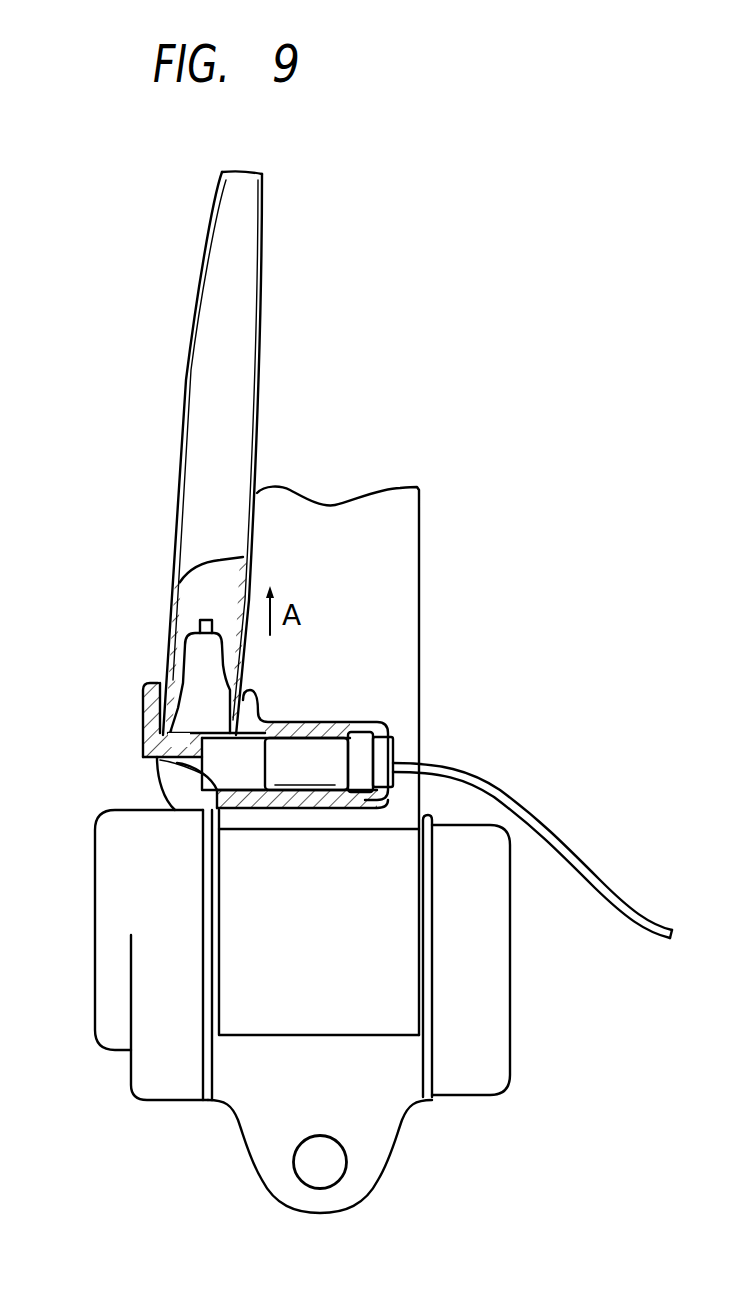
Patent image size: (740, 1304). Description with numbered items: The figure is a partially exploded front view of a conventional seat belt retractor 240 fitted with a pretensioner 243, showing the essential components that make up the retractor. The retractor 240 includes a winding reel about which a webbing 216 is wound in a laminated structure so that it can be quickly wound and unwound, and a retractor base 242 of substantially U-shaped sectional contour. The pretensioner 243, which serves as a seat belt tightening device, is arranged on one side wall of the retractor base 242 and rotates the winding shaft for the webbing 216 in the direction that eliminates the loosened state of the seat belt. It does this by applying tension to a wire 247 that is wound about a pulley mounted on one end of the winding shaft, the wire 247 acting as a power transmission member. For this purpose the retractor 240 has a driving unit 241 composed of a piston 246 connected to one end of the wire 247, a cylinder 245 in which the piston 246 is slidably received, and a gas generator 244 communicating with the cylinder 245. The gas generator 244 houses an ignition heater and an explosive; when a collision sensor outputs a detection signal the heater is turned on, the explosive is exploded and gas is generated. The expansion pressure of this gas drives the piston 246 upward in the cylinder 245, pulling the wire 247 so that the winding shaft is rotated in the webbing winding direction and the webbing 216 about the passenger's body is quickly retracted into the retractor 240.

The webbing 216 is at (398, 550).
The retractor 240 is at (336, 1011).
The driving unit 241 is at (146, 668).
The retractor base 242 is at (362, 1162).
The pretensioner 243 is at (150, 1067).
The gas generator 244 is at (307, 760).
The cylinder 245 is at (188, 456).
The piston 246 is at (190, 663).
The wire 247 is at (143, 748).